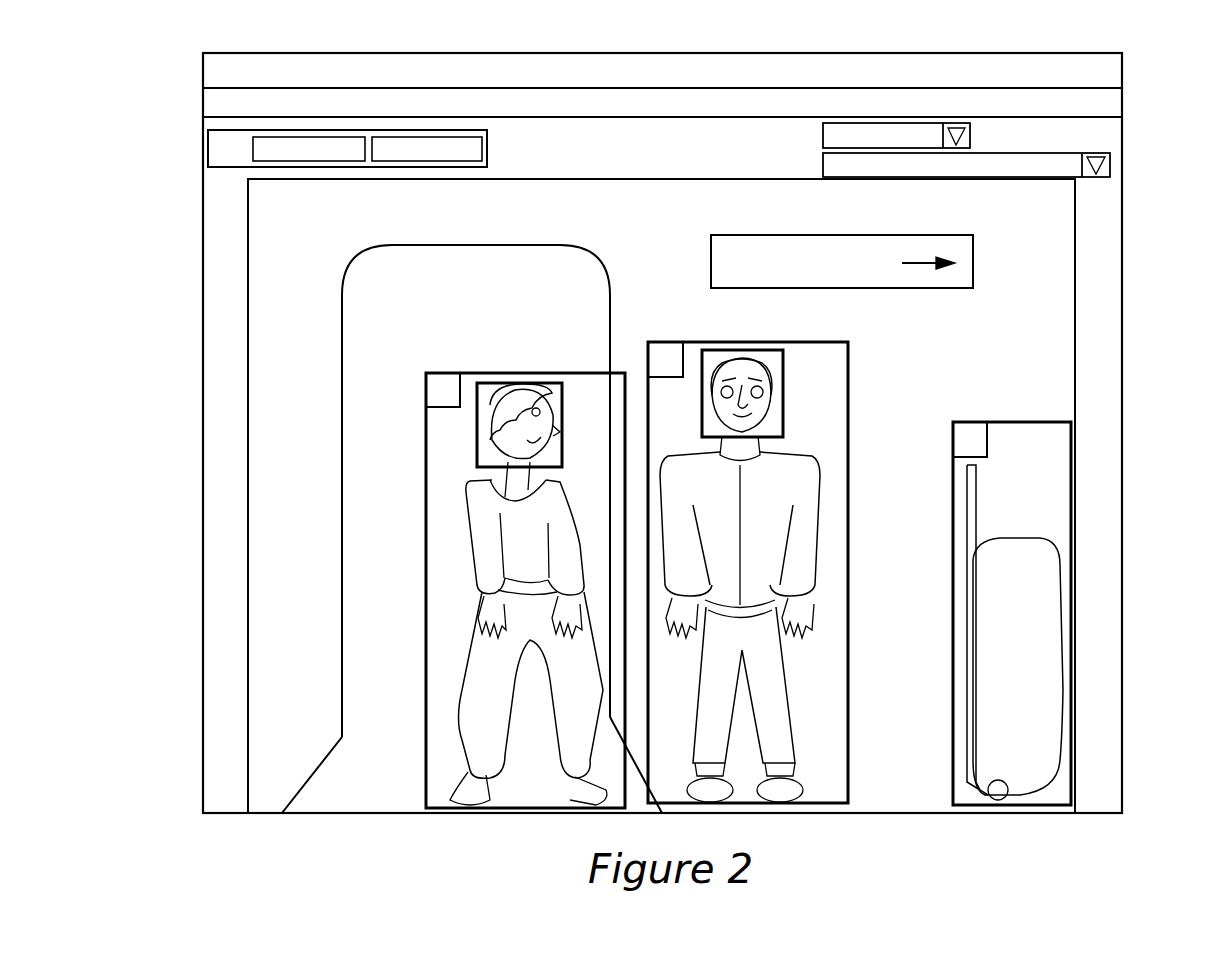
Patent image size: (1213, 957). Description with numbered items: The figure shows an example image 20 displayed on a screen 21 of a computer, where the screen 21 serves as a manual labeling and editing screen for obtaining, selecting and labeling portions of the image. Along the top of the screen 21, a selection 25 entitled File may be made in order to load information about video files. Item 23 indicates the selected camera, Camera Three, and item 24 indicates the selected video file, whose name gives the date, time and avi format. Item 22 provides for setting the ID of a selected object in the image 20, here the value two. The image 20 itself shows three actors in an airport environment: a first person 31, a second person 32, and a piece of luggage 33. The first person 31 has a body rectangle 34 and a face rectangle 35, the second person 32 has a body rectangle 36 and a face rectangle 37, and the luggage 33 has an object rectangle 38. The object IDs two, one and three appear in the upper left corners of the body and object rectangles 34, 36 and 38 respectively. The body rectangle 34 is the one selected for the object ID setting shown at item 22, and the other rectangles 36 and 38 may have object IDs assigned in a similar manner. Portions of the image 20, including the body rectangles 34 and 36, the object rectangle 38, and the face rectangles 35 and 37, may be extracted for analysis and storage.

The image 20 is at (981, 351).
The screen 21 is at (1118, 72).
The ID setting item 22 is at (487, 152).
The camera selection item 23 is at (968, 137).
The video file selection item 24 is at (1110, 165).
The File selection 25 is at (203, 101).
The person 31 is at (468, 518).
The person 32 is at (820, 457).
The luggage 33 is at (1022, 535).
The body rectangle 34 is at (523, 372).
The face rectangle 35 is at (477, 453).
The body rectangle 36 is at (818, 341).
The face rectangle 37 is at (785, 390).
The object rectangle 38 is at (1025, 421).